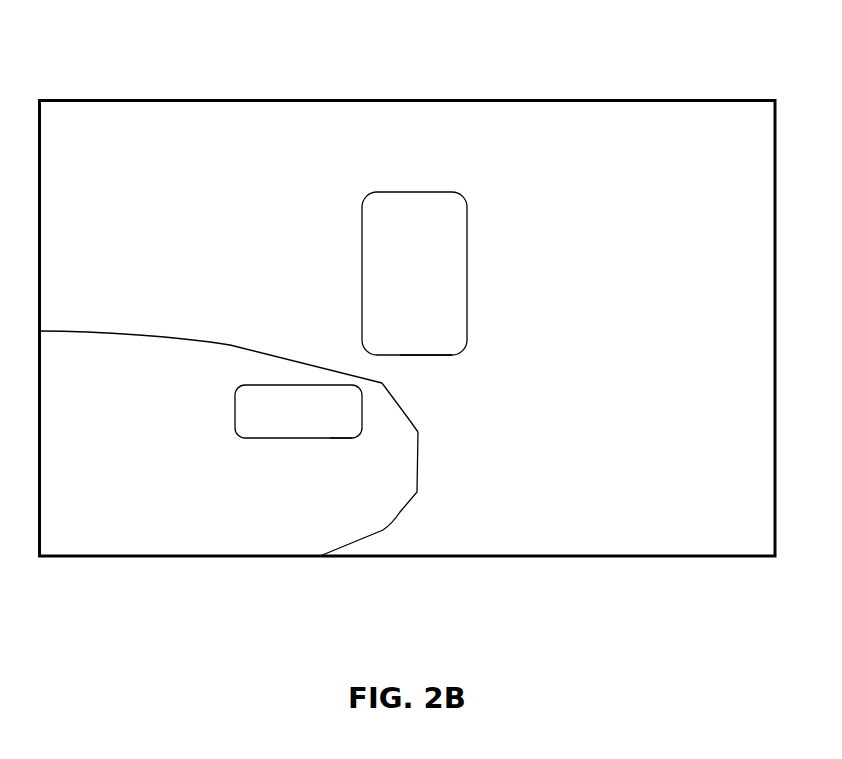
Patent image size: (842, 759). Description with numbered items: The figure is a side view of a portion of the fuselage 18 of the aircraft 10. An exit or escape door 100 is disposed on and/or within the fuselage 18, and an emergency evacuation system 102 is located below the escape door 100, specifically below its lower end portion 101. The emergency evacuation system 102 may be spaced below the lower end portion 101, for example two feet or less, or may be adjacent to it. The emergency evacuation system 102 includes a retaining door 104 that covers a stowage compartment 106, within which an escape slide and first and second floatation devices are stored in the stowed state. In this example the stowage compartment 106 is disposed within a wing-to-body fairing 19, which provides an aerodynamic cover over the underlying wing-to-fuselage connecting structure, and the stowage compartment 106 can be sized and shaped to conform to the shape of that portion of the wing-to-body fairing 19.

The aircraft 10 is at (699, 69).
The fuselage 18 is at (151, 160).
The wing-to-body fairing 19 is at (402, 510).
The escape door 100 is at (415, 192).
The lower end portion 101 is at (427, 354).
The emergency evacuation system 102 is at (401, 413).
The retaining door 104 is at (353, 438).
The stowage compartment 106 is at (325, 385).